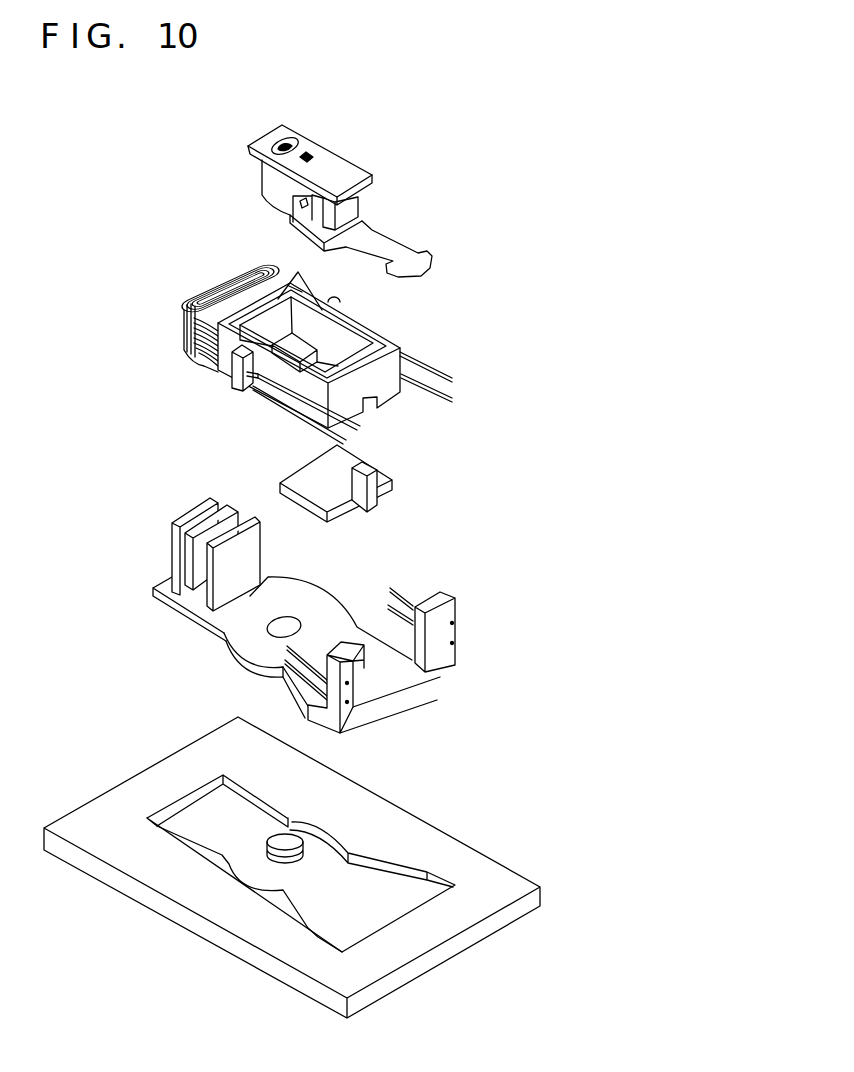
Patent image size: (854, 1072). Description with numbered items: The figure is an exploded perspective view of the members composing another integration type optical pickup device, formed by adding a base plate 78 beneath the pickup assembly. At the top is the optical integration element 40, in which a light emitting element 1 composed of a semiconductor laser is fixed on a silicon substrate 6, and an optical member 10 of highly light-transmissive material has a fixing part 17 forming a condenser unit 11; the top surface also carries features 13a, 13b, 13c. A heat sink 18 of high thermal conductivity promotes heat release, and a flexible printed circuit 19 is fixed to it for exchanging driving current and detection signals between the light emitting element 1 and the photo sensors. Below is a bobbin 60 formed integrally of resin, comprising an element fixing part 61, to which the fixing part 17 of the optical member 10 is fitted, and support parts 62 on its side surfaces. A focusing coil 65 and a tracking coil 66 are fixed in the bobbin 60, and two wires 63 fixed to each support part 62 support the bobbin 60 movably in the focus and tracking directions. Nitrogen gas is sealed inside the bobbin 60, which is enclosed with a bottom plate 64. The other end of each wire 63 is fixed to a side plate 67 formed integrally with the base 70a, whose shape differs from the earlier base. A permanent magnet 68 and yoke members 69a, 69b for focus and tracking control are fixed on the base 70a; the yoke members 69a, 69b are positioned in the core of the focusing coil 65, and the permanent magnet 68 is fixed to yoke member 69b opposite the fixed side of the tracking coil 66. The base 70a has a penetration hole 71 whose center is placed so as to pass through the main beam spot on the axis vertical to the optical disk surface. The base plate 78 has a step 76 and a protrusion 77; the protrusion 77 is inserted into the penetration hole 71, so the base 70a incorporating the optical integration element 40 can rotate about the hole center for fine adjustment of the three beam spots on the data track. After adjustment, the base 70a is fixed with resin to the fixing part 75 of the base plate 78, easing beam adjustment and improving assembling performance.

The light emitting element 1 is at (303, 202).
The silicon substrate 6 is at (304, 212).
The optical member 10 is at (268, 208).
The condenser unit 11 is at (286, 141).
The indicator 13a is at (307, 156).
The indicator 13b is at (302, 156).
The indicator 13c is at (309, 158).
The fixing part 17 is at (250, 152).
The heat sink 18 is at (326, 236).
The flexible printed circuit 19 is at (387, 248).
The optical integration element 40 is at (398, 197).
The bobbin 60 is at (388, 393).
The element fixing part 61 is at (300, 281).
The support part 62 is at (337, 295).
The wires 63 is at (431, 387).
The bottom plate 64 is at (316, 468).
The focusing coil 65 is at (203, 366).
The tracking coil 66 is at (208, 291).
The side plate 67 is at (443, 678).
The permanent magnet 68 is at (170, 586).
The yoke member 69a is at (252, 550).
The yoke member 69b is at (168, 557).
The base 70a is at (243, 641).
The penetration hole 71 is at (270, 633).
The fixing part 75 is at (488, 878).
The step 76 is at (385, 883).
The protrusion 77 is at (280, 842).
The base plate 78 is at (178, 933).